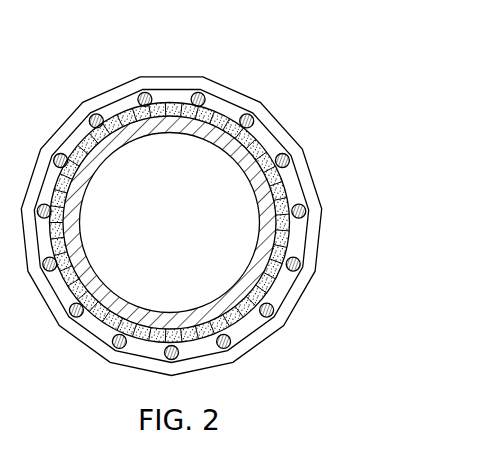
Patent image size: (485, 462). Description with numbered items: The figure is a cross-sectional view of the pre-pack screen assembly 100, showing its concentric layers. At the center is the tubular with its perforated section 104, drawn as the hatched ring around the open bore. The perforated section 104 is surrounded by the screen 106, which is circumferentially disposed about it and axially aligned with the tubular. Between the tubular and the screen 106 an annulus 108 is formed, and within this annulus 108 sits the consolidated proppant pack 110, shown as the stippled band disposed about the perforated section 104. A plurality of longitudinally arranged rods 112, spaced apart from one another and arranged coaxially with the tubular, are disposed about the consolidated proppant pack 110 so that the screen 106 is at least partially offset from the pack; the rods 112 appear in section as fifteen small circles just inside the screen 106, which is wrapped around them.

The pre-pack screen assembly 100 is at (380, 126).
The perforated section 104 is at (202, 131).
The screen 106 is at (172, 74).
The annulus 108 is at (115, 109).
The consolidated proppant pack 110 is at (294, 184).
The rods 112 is at (250, 115).